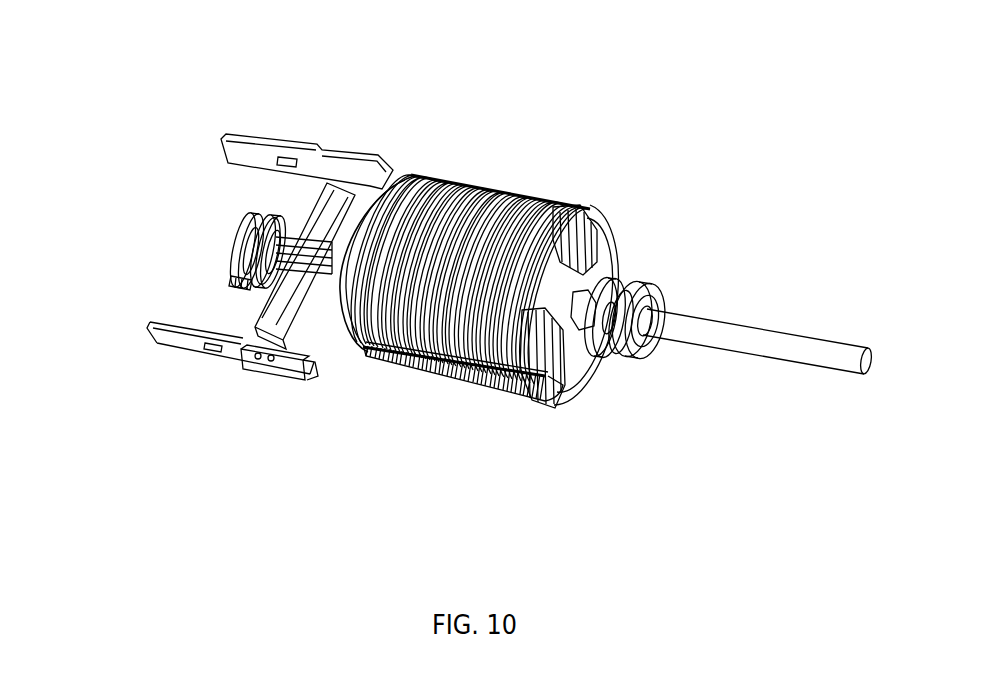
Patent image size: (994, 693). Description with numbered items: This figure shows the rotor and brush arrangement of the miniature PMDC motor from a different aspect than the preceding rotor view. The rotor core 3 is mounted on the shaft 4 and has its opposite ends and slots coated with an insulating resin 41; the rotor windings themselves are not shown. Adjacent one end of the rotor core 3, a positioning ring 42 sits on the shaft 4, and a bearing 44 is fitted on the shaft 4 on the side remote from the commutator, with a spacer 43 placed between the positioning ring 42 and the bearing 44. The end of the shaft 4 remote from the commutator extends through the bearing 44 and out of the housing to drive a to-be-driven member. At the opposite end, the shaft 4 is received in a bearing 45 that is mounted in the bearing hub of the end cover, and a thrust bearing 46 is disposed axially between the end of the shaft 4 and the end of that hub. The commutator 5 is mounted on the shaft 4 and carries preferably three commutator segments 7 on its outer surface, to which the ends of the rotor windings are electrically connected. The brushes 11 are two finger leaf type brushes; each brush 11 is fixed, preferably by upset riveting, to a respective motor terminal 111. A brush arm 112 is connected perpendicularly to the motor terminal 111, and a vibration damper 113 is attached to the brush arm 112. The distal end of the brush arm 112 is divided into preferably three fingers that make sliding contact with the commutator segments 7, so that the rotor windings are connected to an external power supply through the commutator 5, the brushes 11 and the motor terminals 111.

The rotor core 3 is at (487, 400).
The shaft 4 is at (793, 347).
The insulating resin 41 is at (558, 403).
The positioning ring 42 is at (613, 280).
The spacer 43 is at (638, 282).
The bearing 44 is at (627, 352).
The bearing 45 is at (246, 254).
The thrust bearing 46 is at (244, 226).
The commutator 5 is at (342, 207).
The commutator segments 7 is at (238, 283).
The brushes 11 is at (246, 371).
The motor terminal 111 is at (197, 347).
The brush arm 112 is at (264, 346).
The vibration damper 113 is at (288, 295).